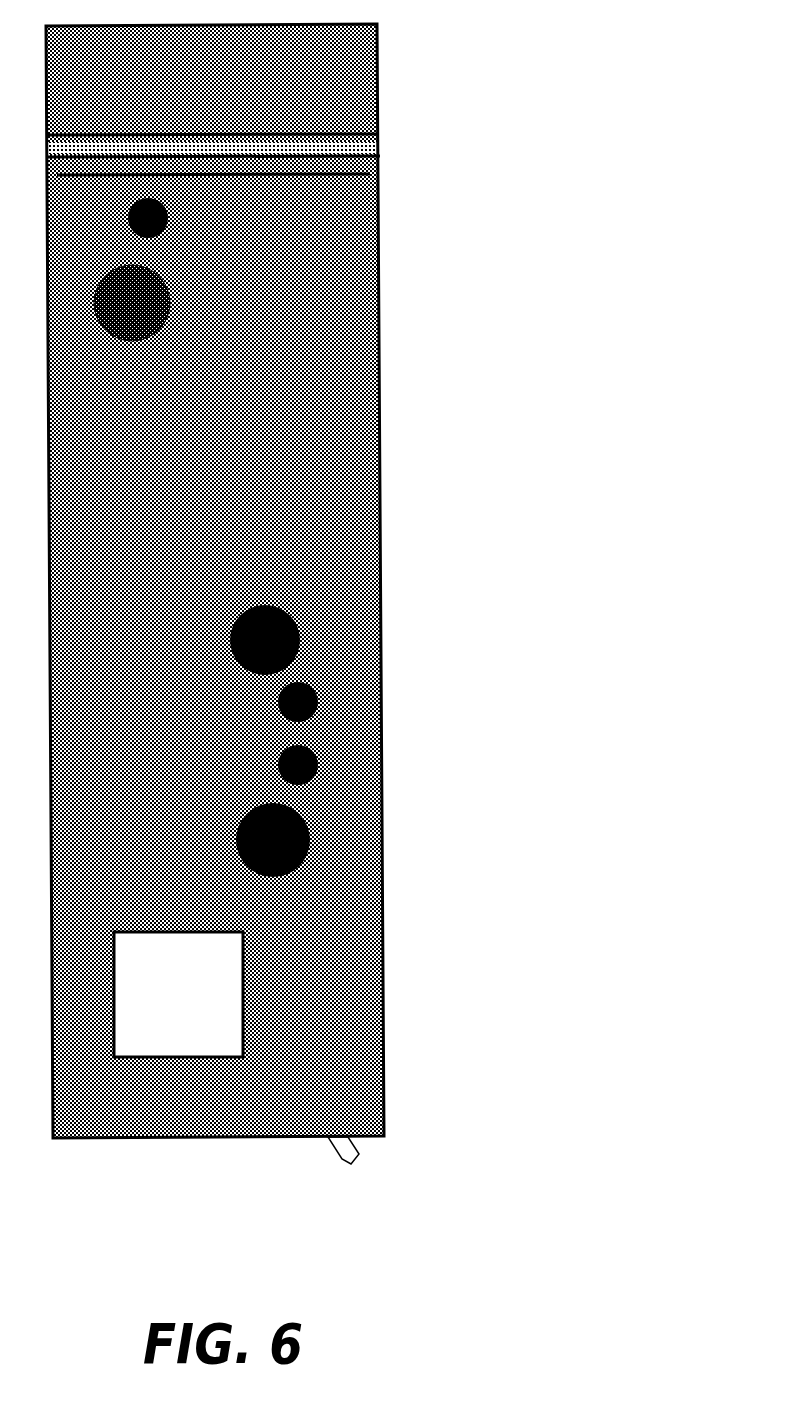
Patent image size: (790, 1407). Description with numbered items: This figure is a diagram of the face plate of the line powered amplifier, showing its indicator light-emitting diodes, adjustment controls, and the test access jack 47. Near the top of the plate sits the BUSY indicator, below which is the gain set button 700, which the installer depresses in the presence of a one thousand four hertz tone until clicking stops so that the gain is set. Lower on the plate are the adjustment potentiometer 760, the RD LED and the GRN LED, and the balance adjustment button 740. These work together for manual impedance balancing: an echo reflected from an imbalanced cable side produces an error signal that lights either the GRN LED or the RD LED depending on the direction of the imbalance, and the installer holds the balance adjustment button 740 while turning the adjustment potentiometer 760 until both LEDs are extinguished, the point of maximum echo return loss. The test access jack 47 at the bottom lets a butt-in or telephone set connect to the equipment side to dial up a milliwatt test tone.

The busy indicator LED BUSY is at (173, 218).
The gain set button 700 is at (185, 297).
The adjustment potentiometer 760 is at (303, 643).
The element RD LED is at (327, 703).
The element GRN LED is at (323, 765).
The balance adjustment button 740 is at (310, 847).
The test access jack 47 is at (257, 988).